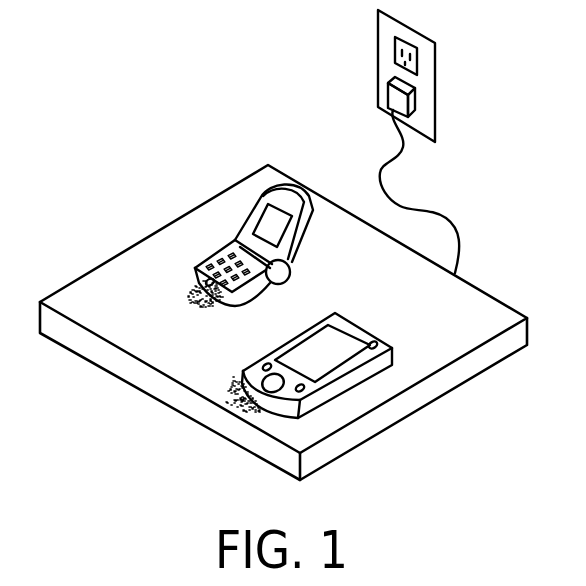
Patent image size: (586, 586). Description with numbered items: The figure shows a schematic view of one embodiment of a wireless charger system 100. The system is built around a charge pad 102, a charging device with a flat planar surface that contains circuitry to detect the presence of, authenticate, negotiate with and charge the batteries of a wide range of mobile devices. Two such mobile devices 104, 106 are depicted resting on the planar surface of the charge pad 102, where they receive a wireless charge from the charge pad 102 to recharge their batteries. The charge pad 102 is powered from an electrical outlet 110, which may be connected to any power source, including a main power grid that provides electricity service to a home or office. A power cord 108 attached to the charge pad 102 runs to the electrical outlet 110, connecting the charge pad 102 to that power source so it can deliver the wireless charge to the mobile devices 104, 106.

The wireless charger system 100 is at (115, 62).
The charge pad 102 is at (68, 285).
The mobile device 104 is at (233, 241).
The mobile device 106 is at (326, 404).
The power cord 108 is at (440, 217).
The electrical outlet 110 is at (423, 35).